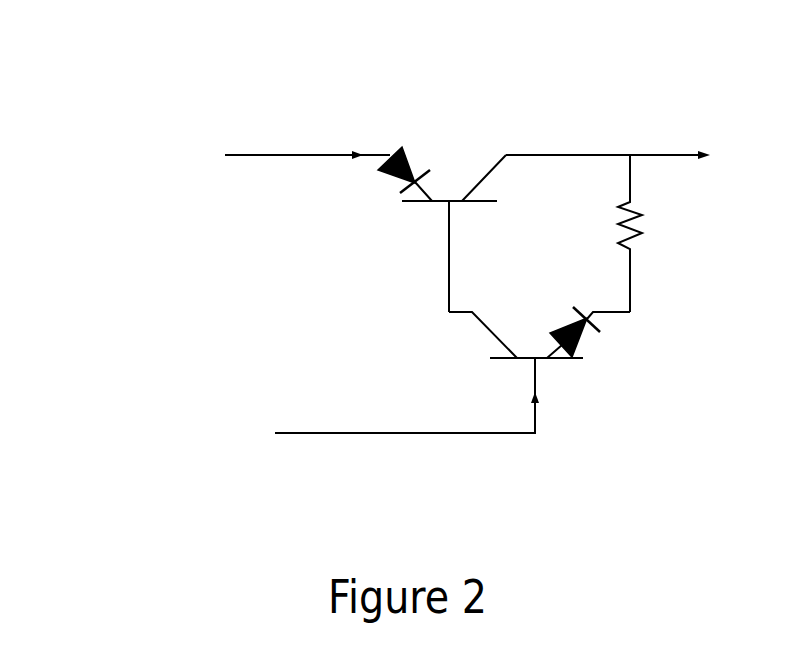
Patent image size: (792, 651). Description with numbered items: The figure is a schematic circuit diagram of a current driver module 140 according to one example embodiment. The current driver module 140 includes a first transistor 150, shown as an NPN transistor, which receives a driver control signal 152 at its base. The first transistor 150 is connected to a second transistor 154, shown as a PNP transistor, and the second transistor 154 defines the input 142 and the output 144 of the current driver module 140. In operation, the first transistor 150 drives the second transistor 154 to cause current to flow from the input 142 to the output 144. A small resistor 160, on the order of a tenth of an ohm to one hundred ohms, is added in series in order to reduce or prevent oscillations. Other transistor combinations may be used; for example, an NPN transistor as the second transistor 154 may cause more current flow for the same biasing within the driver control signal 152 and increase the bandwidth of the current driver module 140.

The current driver module 140 is at (106, 59).
The input 142 is at (335, 153).
The output 144 is at (683, 152).
The first transistor 150 is at (580, 337).
The driver control signal 152 is at (402, 435).
The second transistor 154 is at (403, 150).
The resistor 160 is at (635, 207).